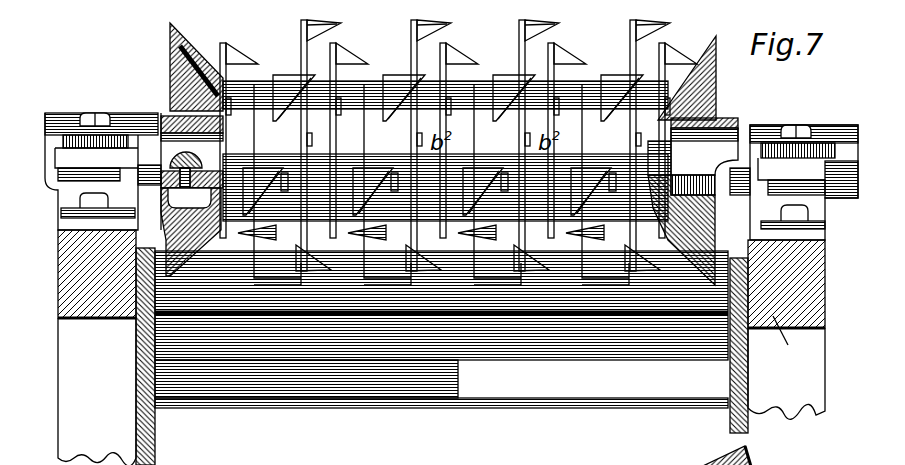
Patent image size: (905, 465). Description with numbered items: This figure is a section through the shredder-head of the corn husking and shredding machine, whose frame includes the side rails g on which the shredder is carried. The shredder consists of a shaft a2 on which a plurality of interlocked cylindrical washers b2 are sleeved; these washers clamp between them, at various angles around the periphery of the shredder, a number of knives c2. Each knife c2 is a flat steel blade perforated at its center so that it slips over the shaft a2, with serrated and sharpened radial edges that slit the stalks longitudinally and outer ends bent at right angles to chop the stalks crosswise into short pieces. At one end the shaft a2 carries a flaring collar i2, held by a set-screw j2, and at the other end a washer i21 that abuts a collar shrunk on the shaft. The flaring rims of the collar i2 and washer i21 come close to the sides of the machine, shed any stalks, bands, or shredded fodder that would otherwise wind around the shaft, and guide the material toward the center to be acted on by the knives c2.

The side rails g is at (82, 297).
The shredder-shaft a2 is at (180, 133).
The flaring collar i2 is at (177, 26).
The end washer i21 is at (693, 68).
The set-screw j2 is at (166, 189).
The cylindrical washers b2 is at (349, 115).
The knives c2 is at (405, 35).